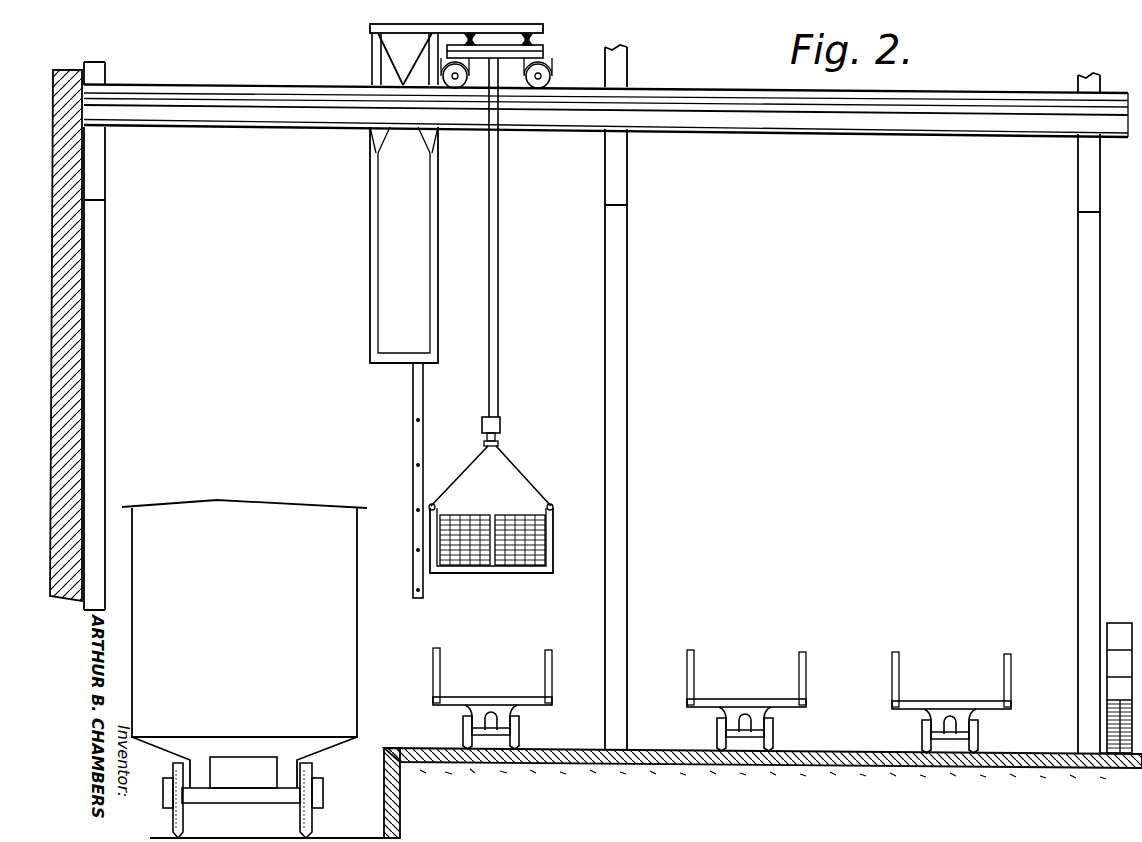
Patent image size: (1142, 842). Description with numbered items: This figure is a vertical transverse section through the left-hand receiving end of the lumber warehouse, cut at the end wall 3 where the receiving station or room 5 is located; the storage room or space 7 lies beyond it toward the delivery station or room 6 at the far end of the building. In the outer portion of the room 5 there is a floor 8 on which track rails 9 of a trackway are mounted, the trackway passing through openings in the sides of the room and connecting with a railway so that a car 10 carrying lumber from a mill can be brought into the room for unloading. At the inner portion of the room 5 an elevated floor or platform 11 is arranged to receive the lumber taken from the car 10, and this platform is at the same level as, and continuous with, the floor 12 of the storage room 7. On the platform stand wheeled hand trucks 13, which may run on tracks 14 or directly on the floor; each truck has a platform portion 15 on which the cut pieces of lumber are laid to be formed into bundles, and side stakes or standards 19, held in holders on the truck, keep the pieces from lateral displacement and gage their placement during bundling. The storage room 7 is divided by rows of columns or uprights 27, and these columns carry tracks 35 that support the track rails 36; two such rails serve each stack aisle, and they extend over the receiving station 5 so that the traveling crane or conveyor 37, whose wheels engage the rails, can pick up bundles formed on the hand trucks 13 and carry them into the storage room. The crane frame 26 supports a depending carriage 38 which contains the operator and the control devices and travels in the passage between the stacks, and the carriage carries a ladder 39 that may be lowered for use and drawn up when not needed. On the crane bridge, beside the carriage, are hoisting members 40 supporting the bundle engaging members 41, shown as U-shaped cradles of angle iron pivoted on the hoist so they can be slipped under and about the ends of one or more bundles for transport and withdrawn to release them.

The end wall 3 is at (62, 282).
The receiving station or room 5 is at (272, 283).
The delivery station or room 6 is at (1107, 715).
The storage room or space 7 is at (1101, 413).
The floor 8 is at (360, 838).
The track rails 9 is at (298, 834).
The car 10 is at (217, 507).
The elevated floor or platform 11 is at (578, 756).
The floor 12 is at (1115, 762).
The wheeled hand truck 13 is at (458, 693).
The tracks 14 is at (463, 748).
The platform portion 15 is at (530, 700).
The stakes or standards 19 is at (548, 665).
The trolley frame 26 is at (443, 54).
The columns or uprights 27 is at (622, 489).
The tracks 35 is at (218, 117).
The track rails 36 is at (210, 92).
The traveling crane or conveyor 37 is at (543, 53).
The depending carriage 38 is at (404, 245).
The ladder 39 is at (420, 390).
The hoisting members 40 is at (498, 441).
The bundle engaging members 41 is at (553, 547).